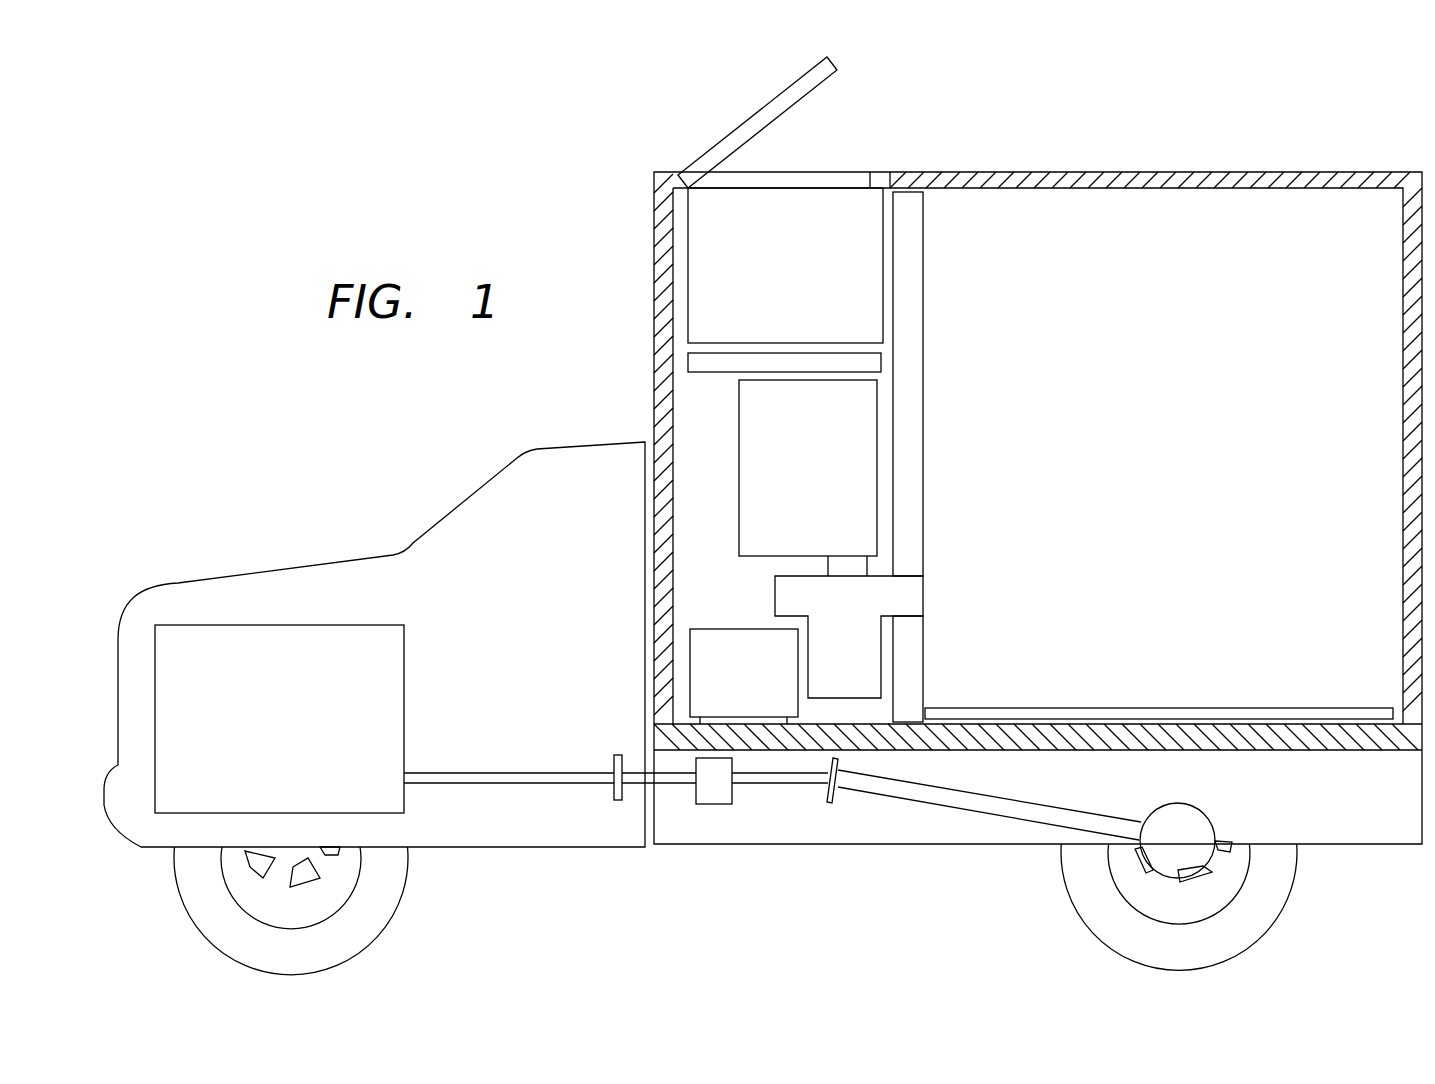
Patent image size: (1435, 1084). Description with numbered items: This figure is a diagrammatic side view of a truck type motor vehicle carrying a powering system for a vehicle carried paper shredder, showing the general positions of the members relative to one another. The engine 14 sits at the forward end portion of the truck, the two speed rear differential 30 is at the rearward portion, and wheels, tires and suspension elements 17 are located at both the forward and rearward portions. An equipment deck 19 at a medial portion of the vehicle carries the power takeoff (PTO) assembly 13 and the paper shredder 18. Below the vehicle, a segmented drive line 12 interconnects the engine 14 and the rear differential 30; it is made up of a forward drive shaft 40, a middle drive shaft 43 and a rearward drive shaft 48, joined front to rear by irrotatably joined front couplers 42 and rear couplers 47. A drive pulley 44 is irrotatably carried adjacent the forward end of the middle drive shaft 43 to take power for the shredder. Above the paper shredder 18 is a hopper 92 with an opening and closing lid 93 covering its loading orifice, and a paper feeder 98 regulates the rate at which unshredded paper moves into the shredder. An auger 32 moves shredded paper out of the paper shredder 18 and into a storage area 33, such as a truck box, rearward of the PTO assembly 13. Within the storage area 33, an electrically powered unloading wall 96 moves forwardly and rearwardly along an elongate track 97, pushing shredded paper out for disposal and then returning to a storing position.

The segmented drive line 12 is at (508, 760).
The power takeoff (PTO) assembly 13 is at (738, 698).
The engine 14 is at (257, 731).
The wheels, tires and suspension elements 17 is at (363, 890).
The paper shredder 18 is at (792, 475).
The equipment deck 19 is at (672, 730).
The two speed rear differential 30 is at (1165, 856).
The auger 32 is at (829, 662).
The storage area 33 is at (1137, 270).
The forward drive shaft 40 is at (486, 784).
The front couplers 42 is at (615, 753).
The middle drive shaft 43 is at (757, 778).
The drive pulley 44 is at (702, 795).
The rear couplers 47 is at (835, 803).
The rearward drive shaft 48 is at (968, 798).
The hopper 92 is at (760, 262).
The lid 93 is at (752, 123).
The unloading wall 96 is at (910, 530).
The elongate track 97 is at (982, 717).
The paper feeder 98 is at (728, 371).